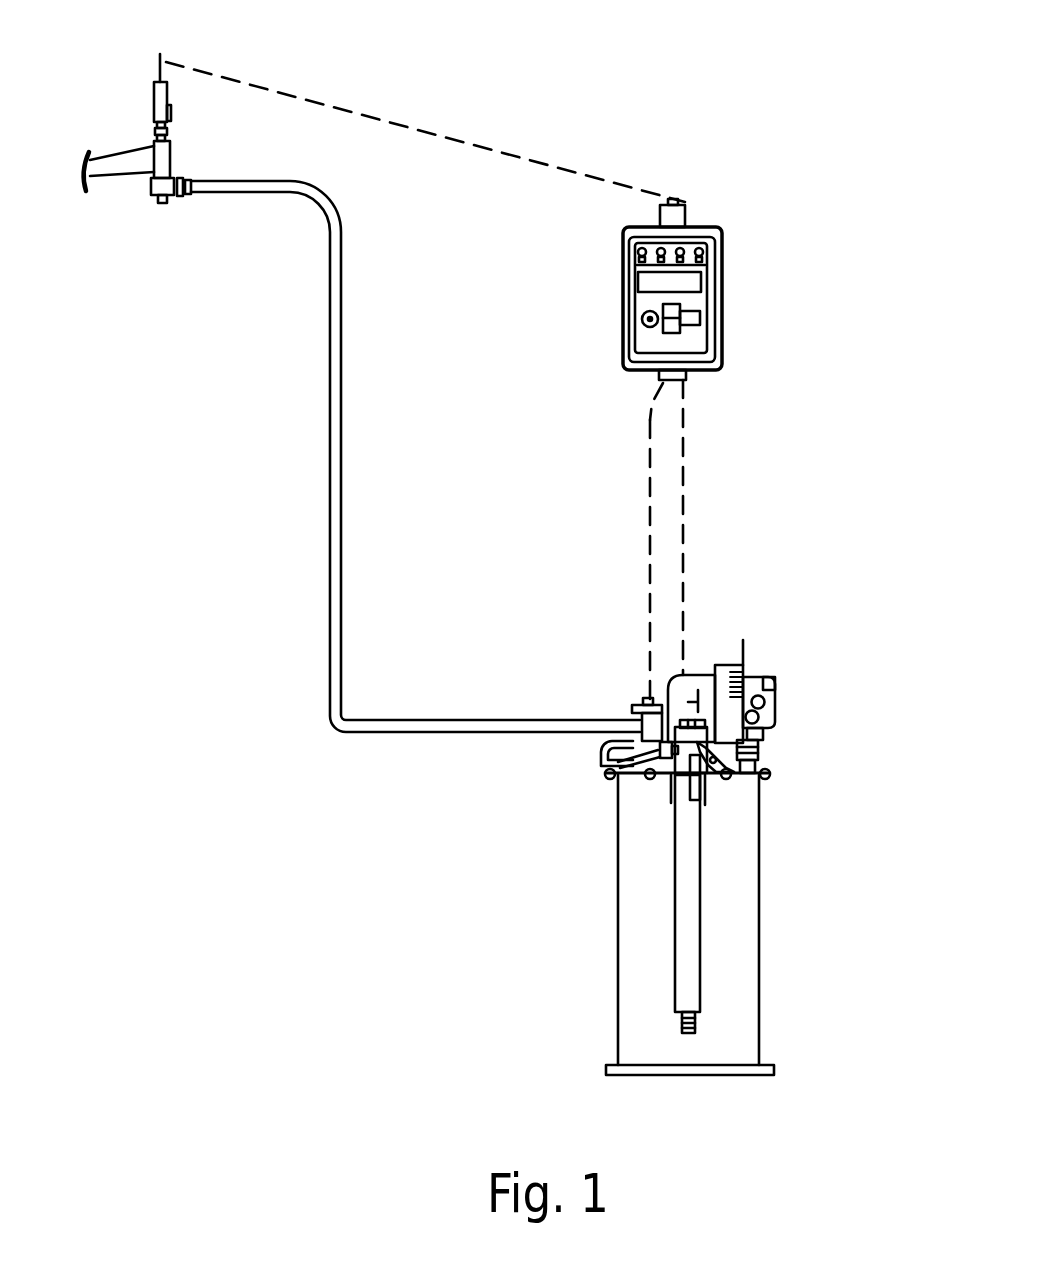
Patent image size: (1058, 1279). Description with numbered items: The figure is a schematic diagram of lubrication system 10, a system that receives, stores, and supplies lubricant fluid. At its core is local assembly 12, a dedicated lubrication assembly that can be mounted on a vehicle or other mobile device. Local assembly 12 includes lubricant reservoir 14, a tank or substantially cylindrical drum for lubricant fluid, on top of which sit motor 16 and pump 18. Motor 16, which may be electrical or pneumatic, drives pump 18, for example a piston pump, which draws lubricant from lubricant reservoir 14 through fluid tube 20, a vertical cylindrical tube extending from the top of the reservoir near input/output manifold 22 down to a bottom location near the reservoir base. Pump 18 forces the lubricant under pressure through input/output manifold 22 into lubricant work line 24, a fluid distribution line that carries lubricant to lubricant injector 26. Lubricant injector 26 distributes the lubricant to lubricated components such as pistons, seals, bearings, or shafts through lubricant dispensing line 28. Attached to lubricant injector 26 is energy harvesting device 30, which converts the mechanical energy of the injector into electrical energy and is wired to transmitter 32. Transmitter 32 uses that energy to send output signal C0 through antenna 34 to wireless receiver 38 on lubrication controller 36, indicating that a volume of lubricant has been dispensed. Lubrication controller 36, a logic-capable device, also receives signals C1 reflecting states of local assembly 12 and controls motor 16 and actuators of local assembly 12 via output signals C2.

The lubrication system 10 is at (547, 81).
The local assembly 12 is at (818, 783).
The lubricant reservoir 14 is at (731, 939).
The motor 16 is at (663, 705).
The pump 18 is at (612, 761).
The fluid tube 20 is at (690, 986).
The input/output manifold 22 is at (650, 728).
The lubricant work line 24 is at (329, 295).
The lubricant injector 26 is at (171, 161).
The lubricant dispensing line 28 is at (115, 178).
The energy harvesting device 30 is at (153, 107).
The transmitter 32 is at (154, 85).
The antenna 34 is at (158, 72).
The lubrication controller 36 is at (731, 277).
The wireless receiver 38 is at (686, 213).
The output signal C0 is at (520, 160).
The signals reflecting states of local assembly C1 is at (685, 481).
The output signals C2 is at (648, 481).